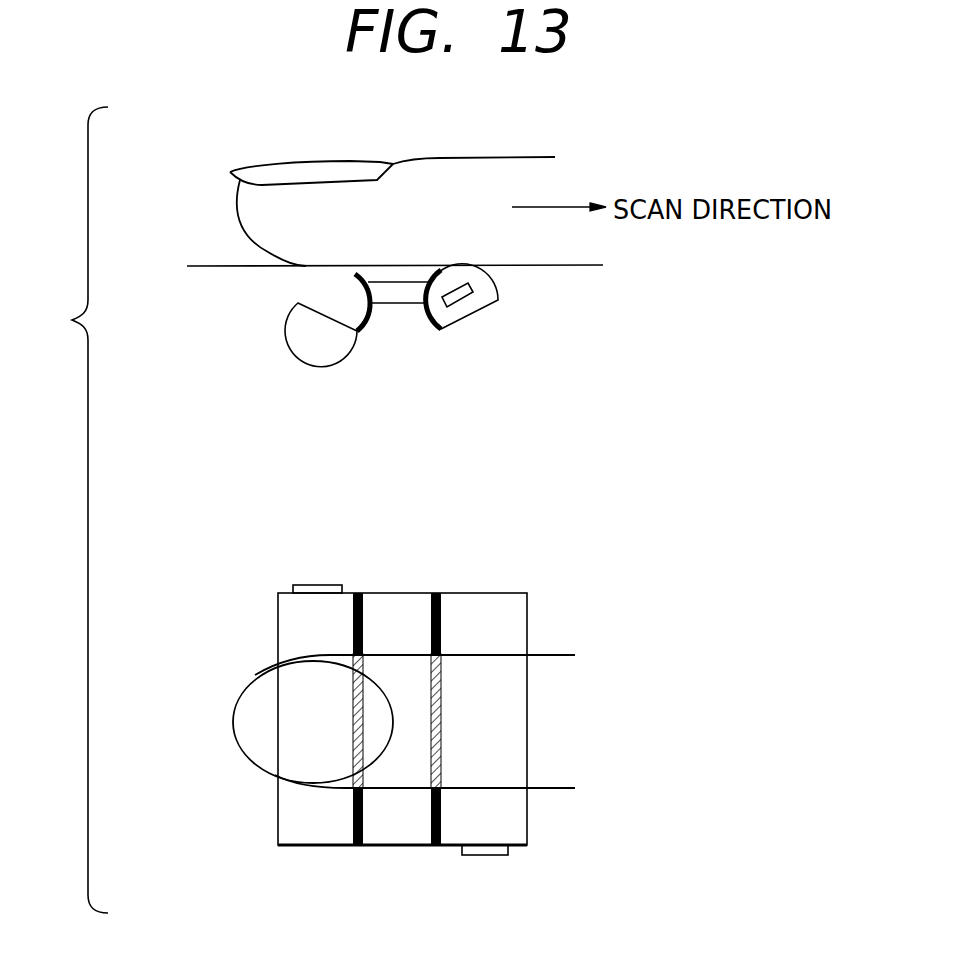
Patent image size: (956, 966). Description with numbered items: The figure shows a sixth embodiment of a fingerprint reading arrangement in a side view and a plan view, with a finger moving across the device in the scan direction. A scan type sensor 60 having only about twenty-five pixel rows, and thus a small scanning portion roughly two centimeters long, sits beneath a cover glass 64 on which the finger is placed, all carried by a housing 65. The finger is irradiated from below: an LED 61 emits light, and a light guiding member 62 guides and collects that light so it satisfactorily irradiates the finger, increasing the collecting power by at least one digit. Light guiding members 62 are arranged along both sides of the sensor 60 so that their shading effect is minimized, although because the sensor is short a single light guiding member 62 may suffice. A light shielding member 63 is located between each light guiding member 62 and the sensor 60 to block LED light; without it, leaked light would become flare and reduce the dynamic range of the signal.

The sensor 60 is at (390, 295).
The LED 61 is at (457, 300).
The light guiding member 62 is at (483, 295).
The light shielding member 63 is at (433, 317).
The cover glass 64 is at (395, 275).
The housing 65 is at (202, 264).